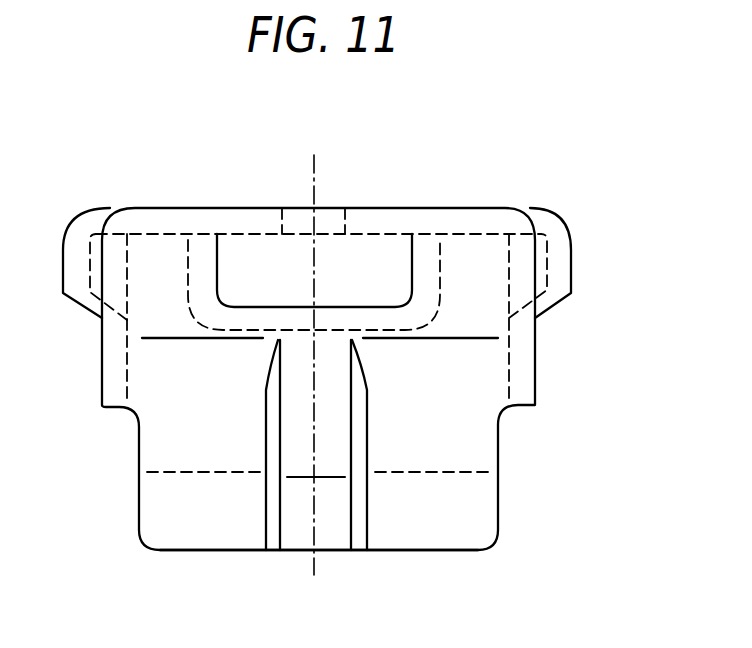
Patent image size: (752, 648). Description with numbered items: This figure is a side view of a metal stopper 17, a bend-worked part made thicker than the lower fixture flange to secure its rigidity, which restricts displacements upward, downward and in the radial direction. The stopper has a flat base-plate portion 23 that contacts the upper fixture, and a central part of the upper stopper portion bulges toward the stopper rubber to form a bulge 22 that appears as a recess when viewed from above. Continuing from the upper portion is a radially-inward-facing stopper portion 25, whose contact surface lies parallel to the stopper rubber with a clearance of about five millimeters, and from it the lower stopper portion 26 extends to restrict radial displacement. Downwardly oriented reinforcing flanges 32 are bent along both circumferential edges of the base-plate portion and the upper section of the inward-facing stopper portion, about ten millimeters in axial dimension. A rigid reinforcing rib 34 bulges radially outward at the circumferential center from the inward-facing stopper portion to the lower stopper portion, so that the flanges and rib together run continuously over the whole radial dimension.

The metal stopper 17 is at (507, 173).
The bulge 22 is at (368, 277).
The flat base-plate portion 23 is at (183, 207).
The radially-inward-facing stopper portion 25 is at (457, 428).
The lower stopper portion 26 is at (445, 523).
The reinforcing flange 32 is at (565, 262).
The reinforcing rib 34 is at (325, 513).